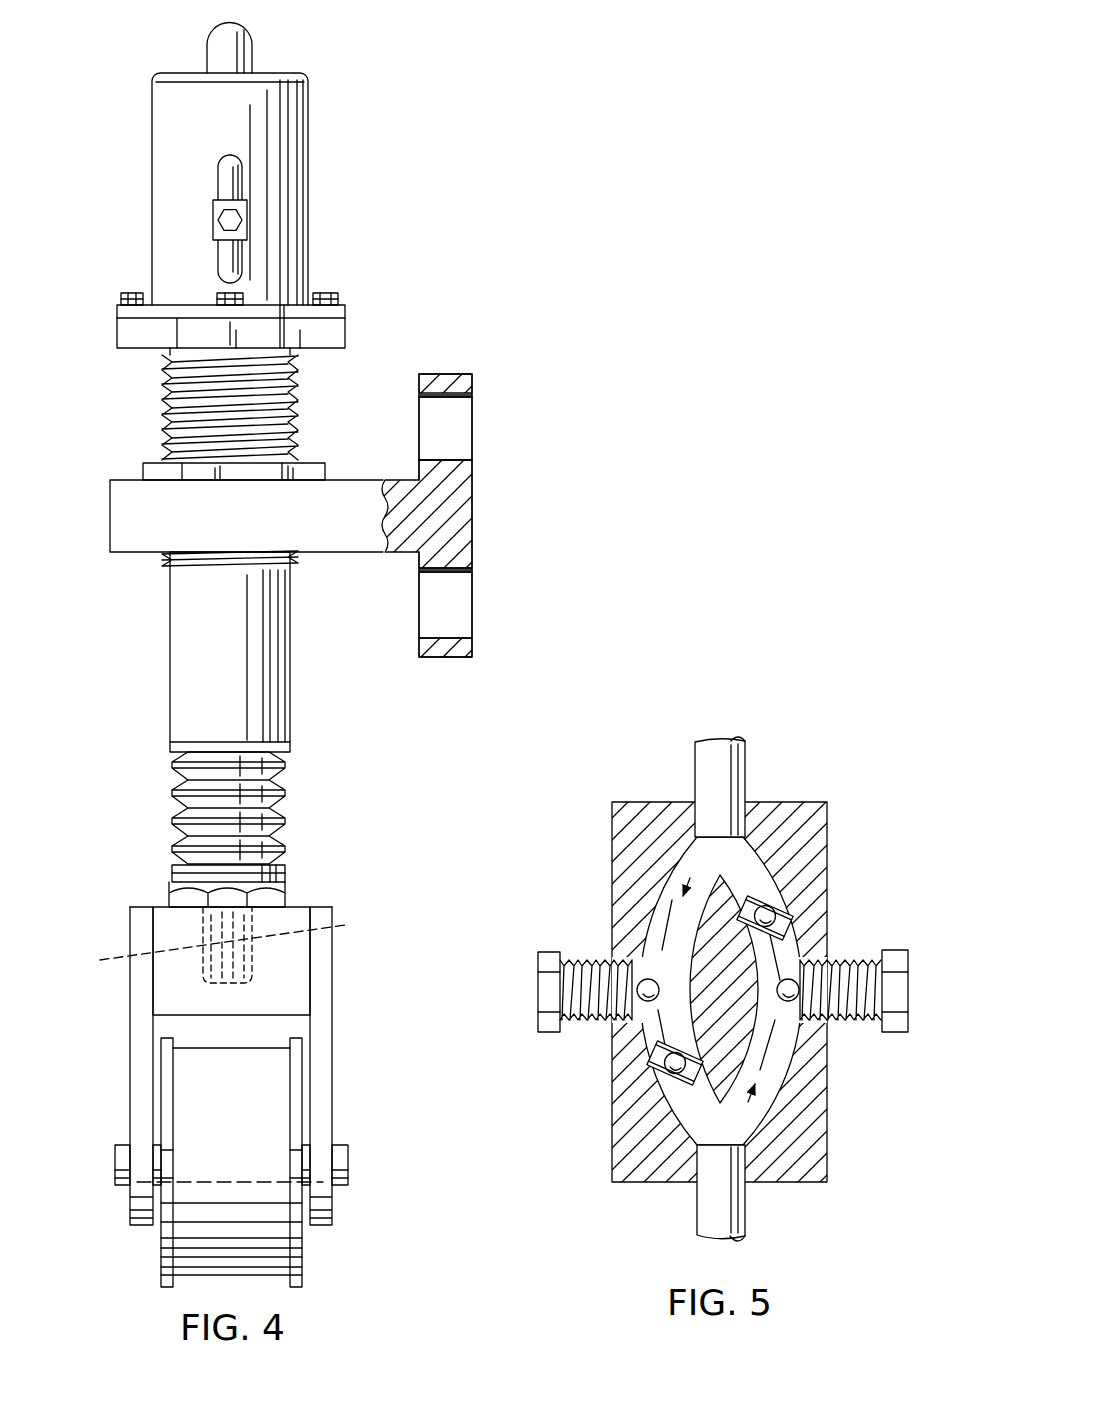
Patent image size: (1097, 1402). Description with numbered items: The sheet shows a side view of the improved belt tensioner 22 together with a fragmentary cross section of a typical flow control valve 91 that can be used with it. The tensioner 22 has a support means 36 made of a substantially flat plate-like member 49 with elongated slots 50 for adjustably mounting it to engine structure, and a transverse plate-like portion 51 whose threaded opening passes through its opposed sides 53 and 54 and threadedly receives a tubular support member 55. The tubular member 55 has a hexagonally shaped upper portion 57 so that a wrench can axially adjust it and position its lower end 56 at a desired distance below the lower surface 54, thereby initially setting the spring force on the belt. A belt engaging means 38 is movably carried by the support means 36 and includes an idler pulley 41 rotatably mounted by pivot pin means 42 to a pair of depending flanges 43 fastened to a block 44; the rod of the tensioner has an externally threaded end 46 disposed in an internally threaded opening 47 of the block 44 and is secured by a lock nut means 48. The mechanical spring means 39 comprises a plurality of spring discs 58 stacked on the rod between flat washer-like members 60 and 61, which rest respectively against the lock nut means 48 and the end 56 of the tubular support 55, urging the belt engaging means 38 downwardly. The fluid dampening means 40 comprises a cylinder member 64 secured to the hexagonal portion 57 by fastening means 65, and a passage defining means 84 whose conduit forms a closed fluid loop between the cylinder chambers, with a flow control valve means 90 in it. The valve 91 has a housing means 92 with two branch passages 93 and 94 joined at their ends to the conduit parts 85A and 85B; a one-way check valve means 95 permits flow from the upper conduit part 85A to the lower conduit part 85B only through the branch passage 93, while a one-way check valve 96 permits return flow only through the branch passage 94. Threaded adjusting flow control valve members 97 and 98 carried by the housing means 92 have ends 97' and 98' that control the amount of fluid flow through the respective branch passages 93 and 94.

In FIG. 4, the belt tensioner 22 is at (434, 292).
In FIG. 4, the support means 36 is at (484, 509).
In FIG. 4, the belt engaging means 38 is at (360, 892).
In FIG. 4, the mechanical spring means 39 is at (285, 809).
In FIG. 4, the fluid dampening means 40 is at (276, 164).
In FIG. 4, the idler pulley 41 is at (162, 1250).
In FIG. 4, the pivot pin means 42 is at (349, 1150).
In FIG. 4, the depending flanges 43 is at (333, 1078).
In FIG. 4, the block 44 is at (234, 961).
In FIG. 4, the externally threaded end 46 is at (345, 925).
In FIG. 4, the internally threaded opening 47 is at (115, 959).
In FIG. 4, the lock nut means 48 is at (170, 895).
In FIG. 4, the plate-like member 49 is at (474, 545).
In FIG. 4, the elongated slots 50 is at (465, 460).
In FIG. 4, the plate-like portion 51 is at (350, 480).
In FIG. 4, the side of plate 53 is at (132, 475).
In FIG. 4, the lower surface of plate 54 is at (267, 511).
In FIG. 4, the tubular support member 55 is at (162, 400).
In FIG. 4, the lower end of tubular support 56 is at (230, 651).
In FIG. 4, the hexagonally shaped upper portion 57 is at (117, 325).
In FIG. 4, the spring discs 58 is at (222, 808).
In FIG. 4, the flat washer-like member 60 is at (287, 875).
In FIG. 4, the flat washer-like member 61 is at (292, 747).
In FIG. 4, the cylinder member 64 is at (310, 215).
In FIG. 4, the fastening means 65 is at (131, 292).
In FIG. 4, the passage defining means 84 is at (243, 177).
In FIG. 5, the passage defining means 84 is at (716, 987).
In FIG. 5, the upper conduit part 85A is at (746, 748).
In FIG. 5, the lower conduit part 85B is at (697, 1215).
In FIG. 4, the flow control valve means 90 is at (211, 218).
In FIG. 5, the flow control valve 91 is at (855, 782).
In FIG. 5, the housing means 92 is at (828, 845).
In FIG. 5, the branch passage 93 is at (652, 905).
In FIG. 5, the branch passage 94 is at (798, 1055).
In FIG. 5, the one-way check valve means 95 is at (645, 1082).
In FIG. 5, the one-way check valve 96 is at (797, 900).
In FIG. 5, the threaded adjusting flow control valve member 97 is at (585, 989).
In FIG. 5, the end of adjusting member 97' is at (615, 955).
In FIG. 5, the threaded adjusting flow control valve member 98 is at (851, 990).
In FIG. 5, the end of adjusting member 98' is at (833, 955).